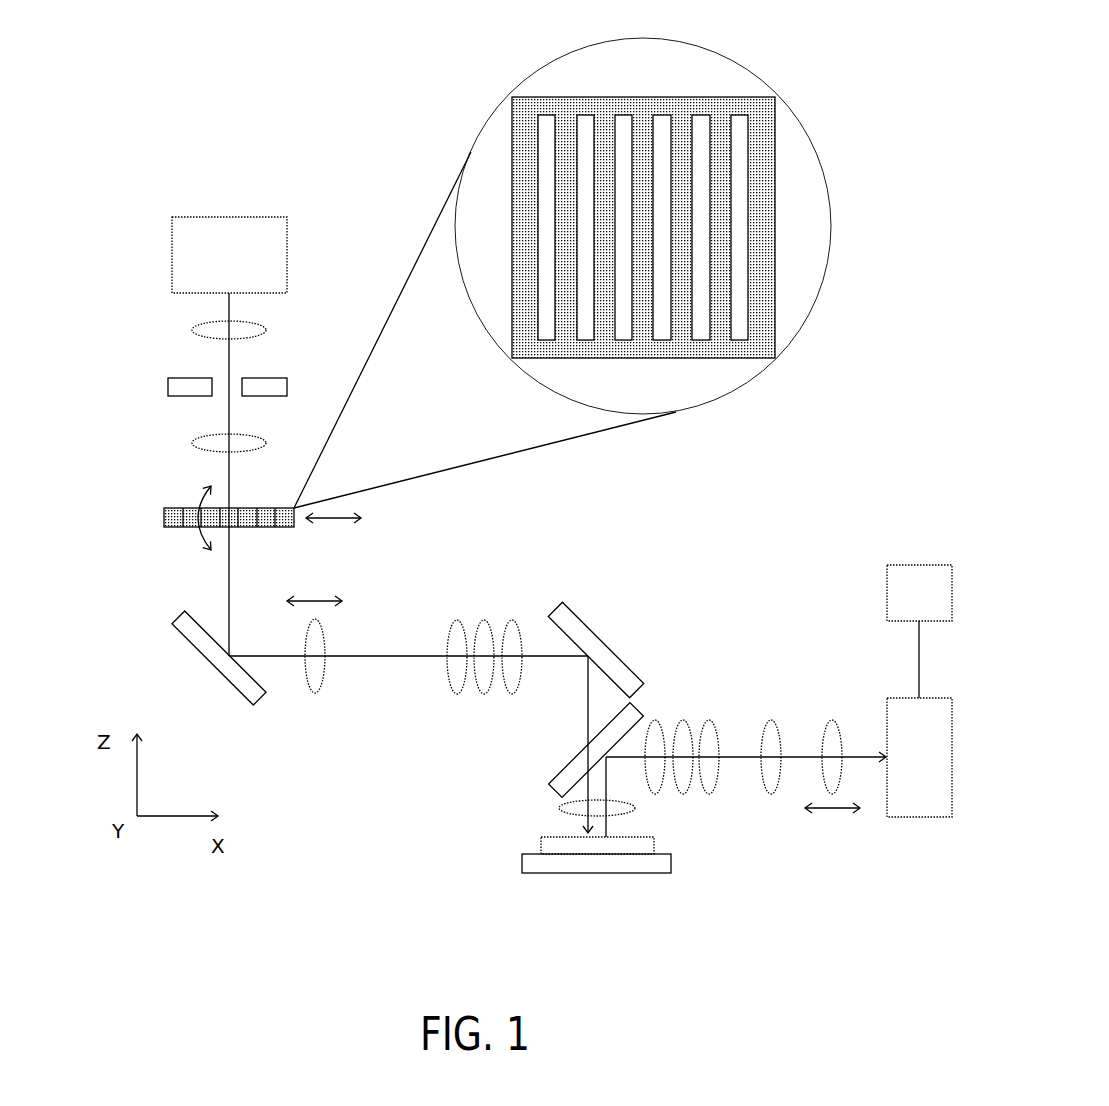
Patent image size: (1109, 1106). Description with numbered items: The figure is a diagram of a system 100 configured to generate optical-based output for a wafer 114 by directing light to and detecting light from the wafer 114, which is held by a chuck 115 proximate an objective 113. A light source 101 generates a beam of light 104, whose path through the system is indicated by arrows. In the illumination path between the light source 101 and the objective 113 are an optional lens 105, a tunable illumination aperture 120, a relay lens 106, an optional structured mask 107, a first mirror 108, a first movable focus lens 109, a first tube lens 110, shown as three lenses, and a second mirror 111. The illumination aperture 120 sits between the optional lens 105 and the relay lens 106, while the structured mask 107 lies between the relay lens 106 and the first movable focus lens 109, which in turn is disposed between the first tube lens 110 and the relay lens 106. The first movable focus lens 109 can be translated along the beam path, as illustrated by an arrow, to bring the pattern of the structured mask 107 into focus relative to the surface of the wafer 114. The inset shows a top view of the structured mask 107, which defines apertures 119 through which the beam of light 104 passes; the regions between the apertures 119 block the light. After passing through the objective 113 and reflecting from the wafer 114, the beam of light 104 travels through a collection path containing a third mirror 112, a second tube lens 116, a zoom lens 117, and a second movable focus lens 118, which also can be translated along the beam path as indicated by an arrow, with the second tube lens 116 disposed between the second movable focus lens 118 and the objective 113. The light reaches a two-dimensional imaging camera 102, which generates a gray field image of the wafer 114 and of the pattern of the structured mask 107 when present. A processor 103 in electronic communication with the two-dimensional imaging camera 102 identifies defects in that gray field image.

The system 100 is at (133, 218).
The light source 101 is at (248, 266).
The 2D imaging camera 102 is at (938, 769).
The processor 103 is at (938, 604).
The beam of light 104 is at (229, 303).
The optional lens 105 is at (192, 330).
The relay lens 106 is at (192, 443).
The structured mask 107 is at (164, 520).
The first mirror 108 is at (195, 648).
The first movable focus lens 109 is at (316, 694).
The first tube lens 110 is at (483, 618).
The second mirror 111 is at (598, 632).
The third mirror 112 is at (580, 752).
The objective 113 is at (562, 810).
The wafer 114 is at (542, 838).
The chuck 115 is at (522, 867).
The second tube lens 116 is at (683, 722).
The zoom lens 117 is at (771, 722).
The second movable focus lens 118 is at (832, 722).
The apertures 119 is at (740, 150).
The tunable illumination aperture 120 is at (168, 395).